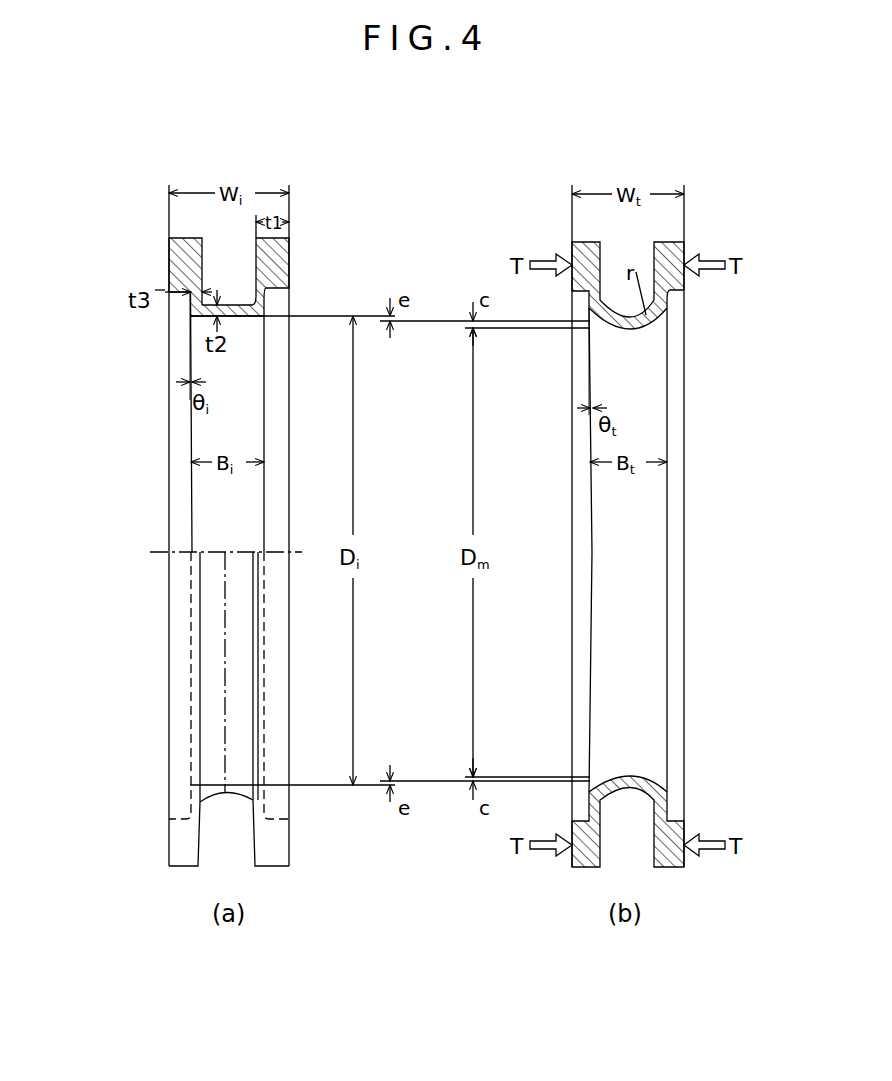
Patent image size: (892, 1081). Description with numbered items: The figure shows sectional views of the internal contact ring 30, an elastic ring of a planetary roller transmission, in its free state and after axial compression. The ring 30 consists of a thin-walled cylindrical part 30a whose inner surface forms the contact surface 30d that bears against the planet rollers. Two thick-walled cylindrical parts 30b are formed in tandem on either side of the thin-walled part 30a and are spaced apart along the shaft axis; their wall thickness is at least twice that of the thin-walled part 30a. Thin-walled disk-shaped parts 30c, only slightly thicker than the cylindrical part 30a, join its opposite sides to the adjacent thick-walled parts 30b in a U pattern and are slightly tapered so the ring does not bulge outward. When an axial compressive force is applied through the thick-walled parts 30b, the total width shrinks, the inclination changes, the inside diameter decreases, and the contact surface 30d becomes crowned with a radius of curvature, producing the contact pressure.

The internal contact ring 30 is at (244, 522).
The thin-walled cylindrical part 30a is at (253, 312).
The thick-walled cylindrical parts 30b is at (182, 262).
The thin-walled disk-shaped parts 30c is at (290, 298).
The contact surface 30d is at (265, 328).